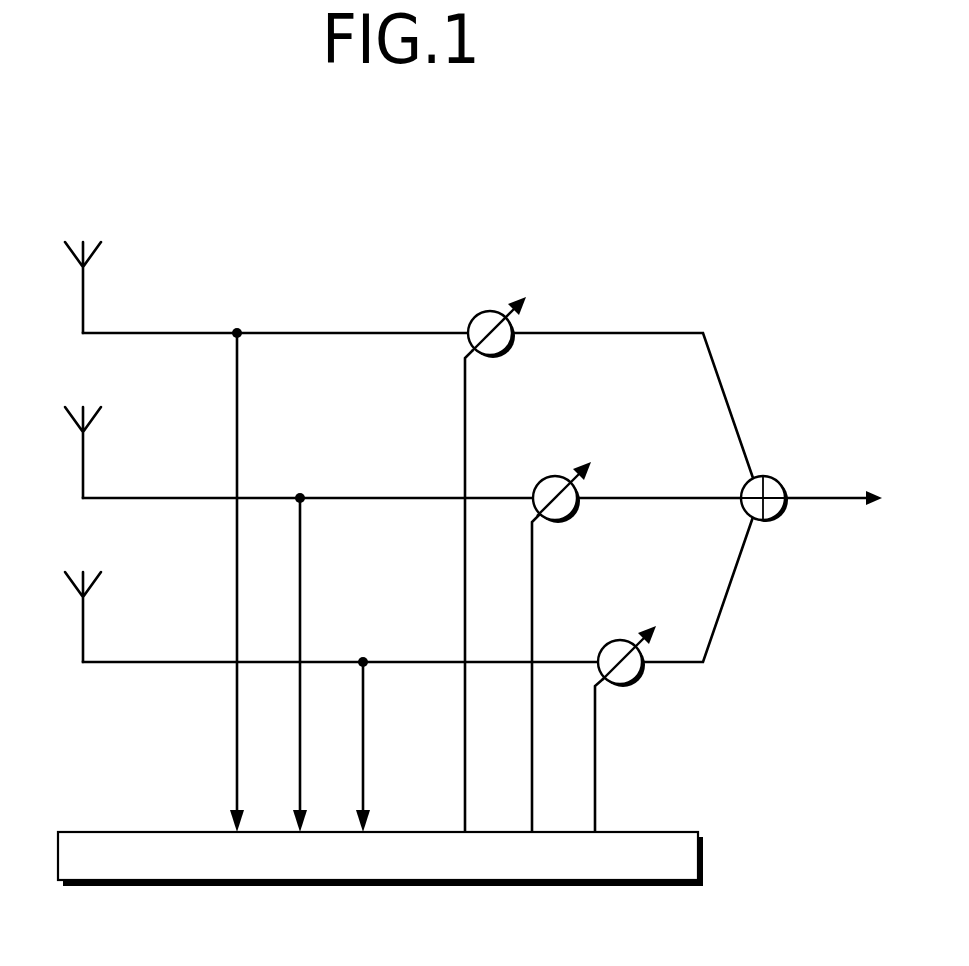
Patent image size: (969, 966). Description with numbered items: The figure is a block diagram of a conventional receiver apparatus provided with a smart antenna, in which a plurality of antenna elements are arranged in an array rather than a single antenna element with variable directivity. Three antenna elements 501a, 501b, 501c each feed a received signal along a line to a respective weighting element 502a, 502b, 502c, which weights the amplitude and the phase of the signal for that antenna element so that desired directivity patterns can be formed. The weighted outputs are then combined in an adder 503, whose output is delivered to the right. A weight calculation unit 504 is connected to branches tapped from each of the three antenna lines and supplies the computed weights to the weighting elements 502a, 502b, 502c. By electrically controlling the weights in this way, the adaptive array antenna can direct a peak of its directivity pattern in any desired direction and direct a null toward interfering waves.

The antenna 501a is at (112, 221).
The antenna 501b is at (112, 386).
The antenna 501c is at (112, 551).
The weight multiplier (variable gain) 502a is at (488, 312).
The weight multiplier (variable gain) 502b is at (550, 477).
The weight multiplier (variable gain) 502c is at (615, 641).
The adder 503 is at (798, 456).
The weight calculation unit 504 is at (372, 887).